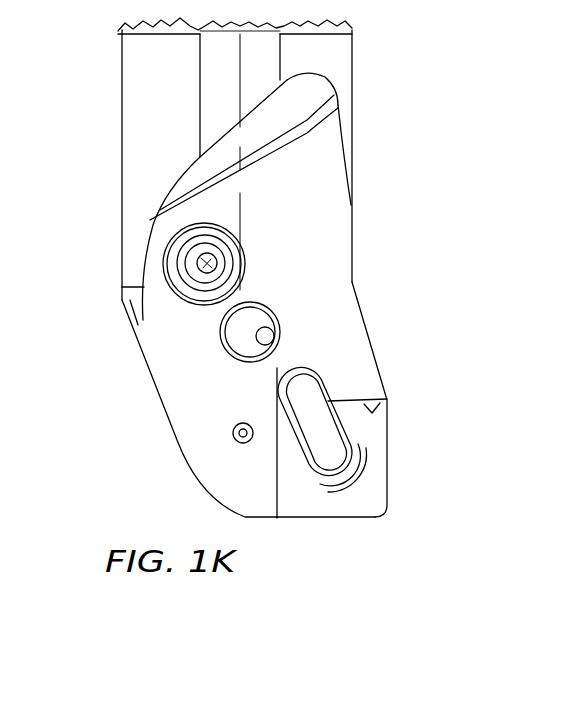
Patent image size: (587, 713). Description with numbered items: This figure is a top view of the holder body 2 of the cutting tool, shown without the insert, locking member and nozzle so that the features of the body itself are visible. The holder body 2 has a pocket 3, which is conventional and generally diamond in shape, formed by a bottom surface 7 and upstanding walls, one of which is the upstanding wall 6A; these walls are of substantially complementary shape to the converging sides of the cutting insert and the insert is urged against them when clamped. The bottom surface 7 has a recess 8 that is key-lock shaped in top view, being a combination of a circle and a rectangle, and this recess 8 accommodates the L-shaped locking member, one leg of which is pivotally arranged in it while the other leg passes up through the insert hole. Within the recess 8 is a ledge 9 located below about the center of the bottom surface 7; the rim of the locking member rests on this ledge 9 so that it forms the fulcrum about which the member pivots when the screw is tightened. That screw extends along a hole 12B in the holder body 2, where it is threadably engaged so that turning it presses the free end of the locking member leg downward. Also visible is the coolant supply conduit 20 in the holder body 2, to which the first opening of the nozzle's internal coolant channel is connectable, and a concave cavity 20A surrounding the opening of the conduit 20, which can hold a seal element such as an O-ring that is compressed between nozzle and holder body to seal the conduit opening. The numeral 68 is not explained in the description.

The holder body 2 is at (340, 70).
The concave cavity 20A is at (182, 247).
The coolant supply conduit 20 is at (203, 262).
The hole 12B is at (263, 333).
The upstanding wall 6A is at (387, 399).
The pocket 3 is at (382, 477).
The ledge 9 is at (357, 518).
The bottom surface 7 is at (355, 517).
The recess 8 is at (292, 412).
The slot 68 is at (280, 493).